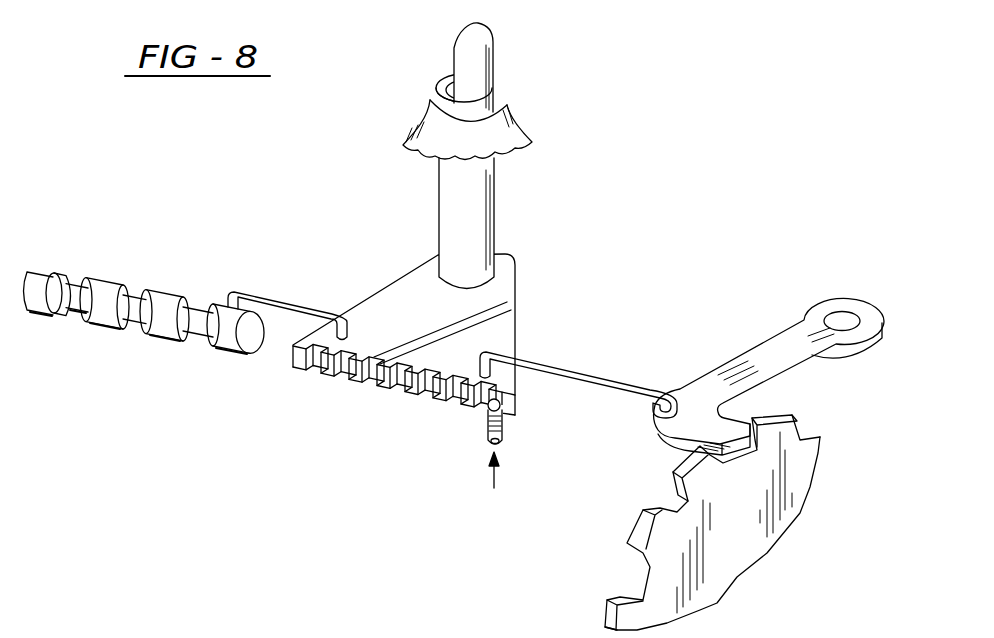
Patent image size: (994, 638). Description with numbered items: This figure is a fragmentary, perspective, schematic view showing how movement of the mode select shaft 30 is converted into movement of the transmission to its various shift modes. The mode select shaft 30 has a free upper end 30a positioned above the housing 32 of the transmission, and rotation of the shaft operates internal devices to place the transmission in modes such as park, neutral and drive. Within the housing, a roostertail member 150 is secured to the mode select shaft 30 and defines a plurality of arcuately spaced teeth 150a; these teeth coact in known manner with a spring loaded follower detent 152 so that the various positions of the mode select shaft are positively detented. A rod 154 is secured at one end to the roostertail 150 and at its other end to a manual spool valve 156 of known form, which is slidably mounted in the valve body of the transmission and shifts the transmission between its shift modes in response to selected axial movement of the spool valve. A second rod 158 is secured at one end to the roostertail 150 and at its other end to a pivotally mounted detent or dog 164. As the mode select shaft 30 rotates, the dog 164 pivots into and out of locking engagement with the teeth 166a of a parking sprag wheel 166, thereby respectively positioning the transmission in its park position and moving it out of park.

The mode select shaft 30 is at (485, 210).
The shaft end portion 30a is at (483, 63).
The housing 32 is at (505, 91).
The roostertail member 150 is at (513, 288).
The teeth 150a is at (347, 386).
The spring loaded follower detent 152 is at (503, 403).
The rod 154 is at (300, 292).
The manual spool valve 156 is at (133, 282).
The rod 158 is at (632, 385).
The detent or dog 164 is at (760, 363).
The parking sprag wheel 166 is at (727, 557).
The teeth 166a is at (642, 532).